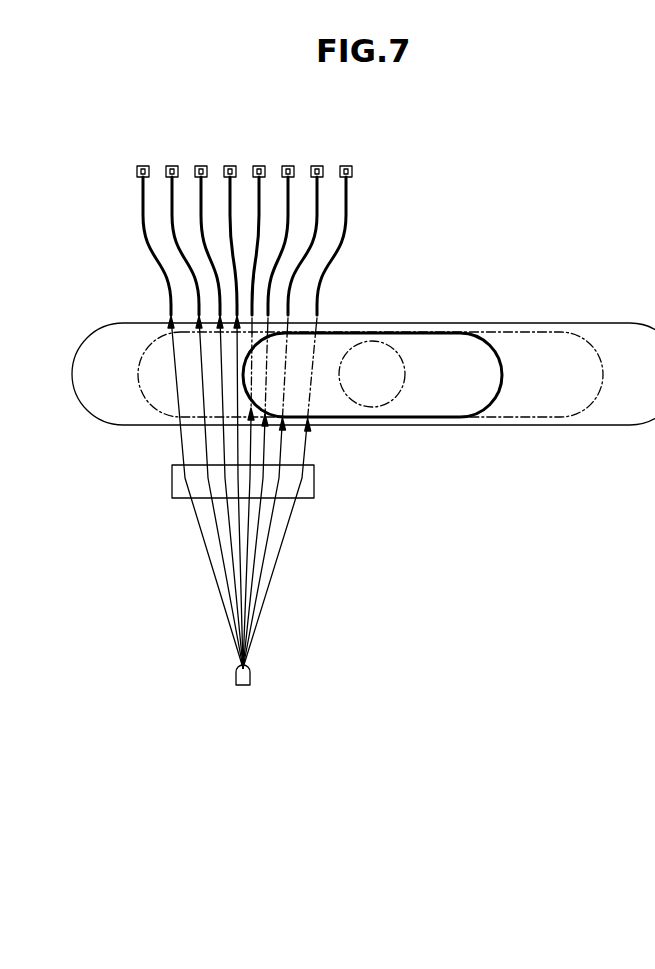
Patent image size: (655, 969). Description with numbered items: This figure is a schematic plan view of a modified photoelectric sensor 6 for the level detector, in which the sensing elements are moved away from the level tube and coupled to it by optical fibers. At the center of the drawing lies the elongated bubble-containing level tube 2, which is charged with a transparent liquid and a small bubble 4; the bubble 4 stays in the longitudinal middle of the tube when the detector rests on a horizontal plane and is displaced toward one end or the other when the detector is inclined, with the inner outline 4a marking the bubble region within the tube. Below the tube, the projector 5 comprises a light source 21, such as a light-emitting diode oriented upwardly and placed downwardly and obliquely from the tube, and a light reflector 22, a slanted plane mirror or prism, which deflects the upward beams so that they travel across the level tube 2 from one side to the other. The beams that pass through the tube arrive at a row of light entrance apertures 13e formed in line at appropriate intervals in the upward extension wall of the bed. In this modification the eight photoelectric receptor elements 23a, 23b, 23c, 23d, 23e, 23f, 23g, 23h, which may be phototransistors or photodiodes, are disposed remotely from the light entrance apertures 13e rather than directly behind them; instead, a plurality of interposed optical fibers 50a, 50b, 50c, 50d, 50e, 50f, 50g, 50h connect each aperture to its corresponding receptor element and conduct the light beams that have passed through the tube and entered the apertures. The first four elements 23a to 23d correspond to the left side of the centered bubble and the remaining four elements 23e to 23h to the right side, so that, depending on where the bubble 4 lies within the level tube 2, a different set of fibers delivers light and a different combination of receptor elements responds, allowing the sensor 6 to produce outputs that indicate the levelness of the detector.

The bubble-containing level tube 2 is at (622, 425).
The bubble 4 is at (112, 402).
The detection window 4a is at (243, 375).
The projector 5 is at (228, 675).
The photoelectric sensor 6 is at (358, 236).
The light entrance apertures 13e is at (196, 334).
The light source 21 is at (252, 676).
The light reflector 22 is at (318, 485).
The photoelectric receptor element 23a is at (137, 171).
The photoelectric receptor element 23b is at (166, 164).
The photoelectric receptor element 23c is at (199, 165).
The photoelectric receptor element 23d is at (229, 165).
The photoelectric receptor element 23e is at (259, 165).
The photoelectric receptor element 23f is at (288, 165).
The photoelectric receptor element 23g is at (318, 165).
The photoelectric receptor element 23h is at (347, 165).
The optical fiber 50a is at (141, 232).
The optical fiber 50b is at (182, 253).
The optical fiber 50c is at (200, 213).
The optical fiber 50d is at (232, 268).
The optical fiber 50e is at (260, 212).
The optical fiber 50f is at (279, 246).
The optical fiber 50g is at (293, 285).
The optical fiber 50h is at (347, 198).